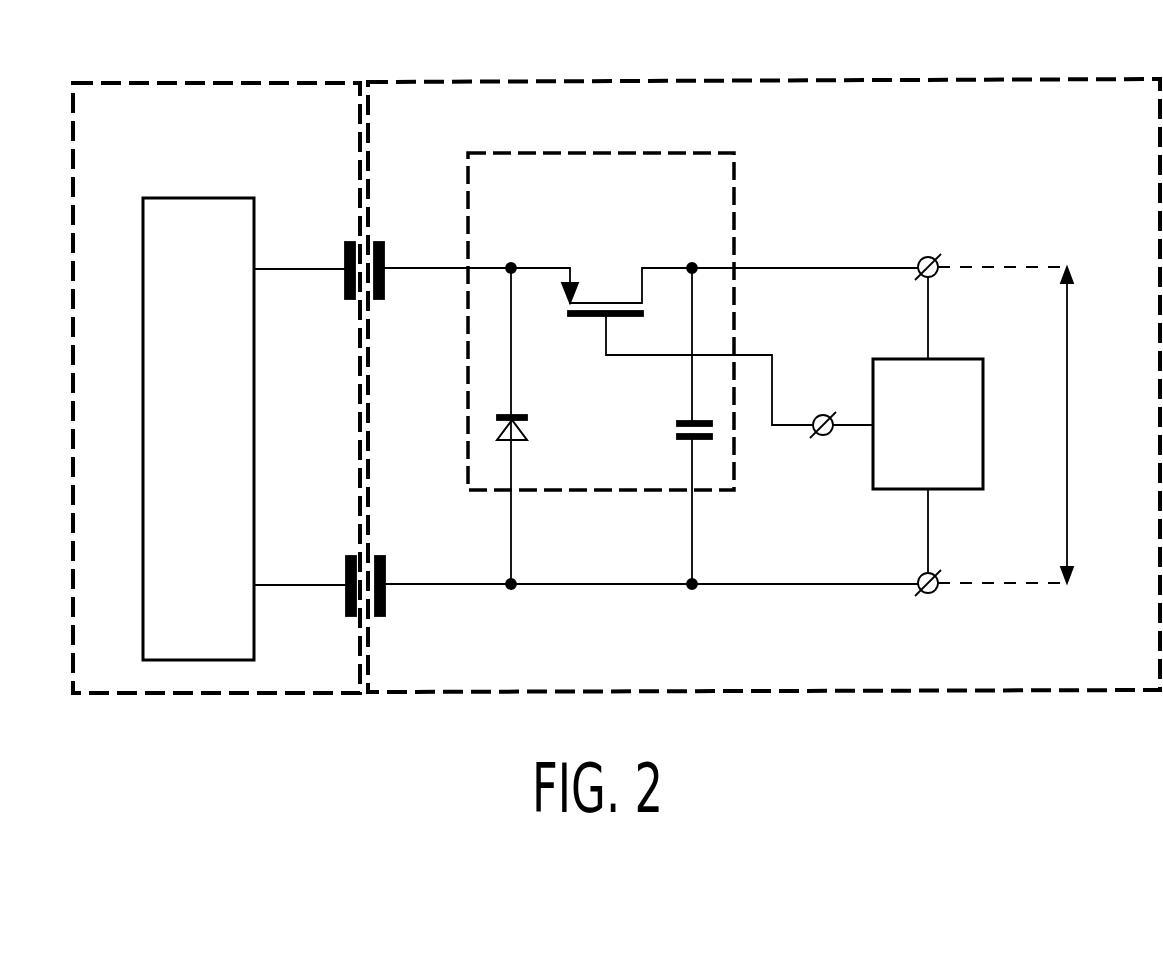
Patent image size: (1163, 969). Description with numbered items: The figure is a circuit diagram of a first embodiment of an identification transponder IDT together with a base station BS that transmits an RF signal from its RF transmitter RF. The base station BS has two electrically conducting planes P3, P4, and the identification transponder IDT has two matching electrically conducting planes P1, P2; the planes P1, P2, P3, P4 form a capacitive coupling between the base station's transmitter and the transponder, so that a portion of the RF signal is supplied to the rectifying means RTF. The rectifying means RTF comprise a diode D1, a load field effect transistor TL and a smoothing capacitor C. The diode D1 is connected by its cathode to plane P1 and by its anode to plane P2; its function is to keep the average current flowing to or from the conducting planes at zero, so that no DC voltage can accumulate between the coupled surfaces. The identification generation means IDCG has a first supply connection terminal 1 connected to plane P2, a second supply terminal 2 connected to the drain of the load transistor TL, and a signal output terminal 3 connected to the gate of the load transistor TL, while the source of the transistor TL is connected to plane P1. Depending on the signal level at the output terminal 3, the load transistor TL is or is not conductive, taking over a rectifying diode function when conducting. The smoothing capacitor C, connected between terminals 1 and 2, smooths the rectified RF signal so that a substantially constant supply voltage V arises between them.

The base station BS is at (199, 83).
The identification transponder IDT is at (747, 80).
The rectifying means RTF is at (734, 180).
The RF transmitter RF is at (198, 429).
The load field effect transistor TL is at (605, 290).
The diode D1 is at (512, 435).
The smoothing capacitor C is at (677, 428).
The electrically conducting plane P1 is at (384, 258).
The electrically conducting plane P2 is at (385, 572).
The electrically conducting plane P3 is at (345, 258).
The electrically conducting plane P4 is at (346, 572).
The first supply connection terminal 1 is at (928, 594).
The second supply terminal 2 is at (928, 257).
The signal output terminal 3 is at (823, 415).
The identification generation means IDCG is at (967, 490).
The supply voltage V is at (1068, 423).